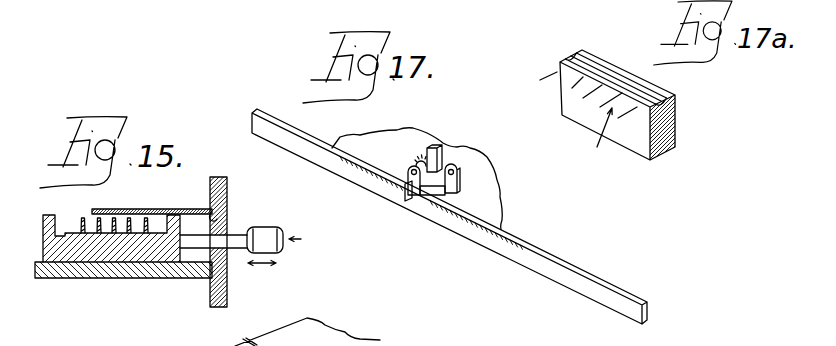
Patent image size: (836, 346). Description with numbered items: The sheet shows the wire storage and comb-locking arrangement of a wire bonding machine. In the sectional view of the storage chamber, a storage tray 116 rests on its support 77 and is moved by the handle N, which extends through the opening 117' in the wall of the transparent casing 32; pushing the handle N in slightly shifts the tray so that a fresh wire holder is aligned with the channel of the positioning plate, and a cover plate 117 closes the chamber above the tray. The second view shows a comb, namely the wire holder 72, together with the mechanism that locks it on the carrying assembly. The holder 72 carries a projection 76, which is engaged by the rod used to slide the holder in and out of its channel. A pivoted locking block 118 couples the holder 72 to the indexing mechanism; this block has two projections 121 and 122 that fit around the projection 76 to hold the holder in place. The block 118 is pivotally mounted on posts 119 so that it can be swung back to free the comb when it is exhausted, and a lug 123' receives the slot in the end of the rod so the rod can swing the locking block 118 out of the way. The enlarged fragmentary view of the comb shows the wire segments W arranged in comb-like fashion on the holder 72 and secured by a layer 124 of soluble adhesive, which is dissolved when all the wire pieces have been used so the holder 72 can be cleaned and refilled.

In FIG. 15, the support 77 is at (44, 278).
In FIG. 15, the storage tray 116 is at (158, 254).
In FIG. 15, the cover plate 117 is at (151, 197).
In FIG. 15, the opening 117' is at (243, 206).
In FIG. 15, the transparent casing 32 is at (228, 290).
In FIG. 15, the handle N is at (304, 241).
In FIG. 17, the wire holder 72 is at (519, 255).
In FIG. 17A, the wire holder 72 is at (673, 147).
In FIG. 17, the projection 76 is at (415, 192).
In FIG. 17, the locking block 118 is at (415, 162).
In FIG. 17, the posts 119 is at (458, 182).
In FIG. 17, the projection 121 is at (405, 185).
In FIG. 17, the projection 122 is at (423, 201).
In FIG. 17, the lug 123' is at (455, 137).
In FIG. 17A, the layer of soluble adhesive 124 is at (608, 33).
In FIG. 17A, the wire segments W is at (598, 141).